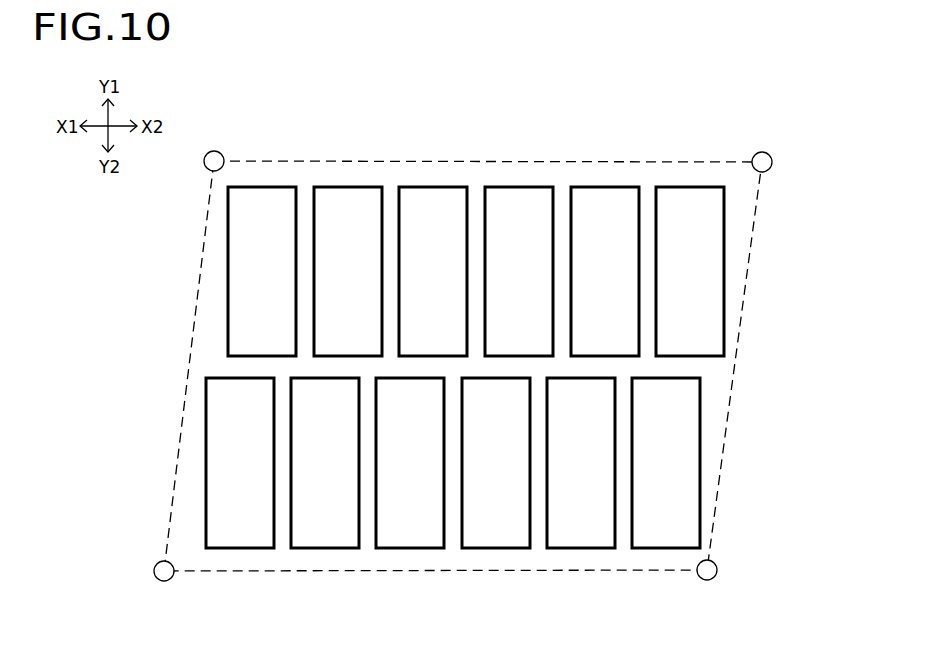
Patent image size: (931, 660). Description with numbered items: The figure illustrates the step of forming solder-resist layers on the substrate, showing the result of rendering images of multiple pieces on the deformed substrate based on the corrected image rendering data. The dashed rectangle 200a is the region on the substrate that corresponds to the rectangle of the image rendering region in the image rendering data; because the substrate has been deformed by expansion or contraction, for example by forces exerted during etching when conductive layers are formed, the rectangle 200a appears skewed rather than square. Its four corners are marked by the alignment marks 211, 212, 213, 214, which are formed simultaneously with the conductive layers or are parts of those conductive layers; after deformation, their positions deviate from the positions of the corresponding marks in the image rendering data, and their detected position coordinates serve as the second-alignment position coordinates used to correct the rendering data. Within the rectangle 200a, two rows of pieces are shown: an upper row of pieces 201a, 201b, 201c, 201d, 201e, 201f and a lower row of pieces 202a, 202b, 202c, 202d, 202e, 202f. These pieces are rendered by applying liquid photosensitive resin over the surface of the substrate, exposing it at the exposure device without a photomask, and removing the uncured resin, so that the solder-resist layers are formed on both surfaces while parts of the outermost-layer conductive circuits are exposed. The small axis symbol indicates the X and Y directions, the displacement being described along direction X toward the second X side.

The rectangle 200a is at (512, 160).
The piece 201a is at (262, 271).
The piece 201b is at (348, 271).
The piece 201c is at (433, 271).
The piece 201d is at (519, 271).
The piece 201e is at (605, 271).
The piece 201f is at (690, 271).
The piece 202a is at (240, 463).
The piece 202b is at (325, 463).
The piece 202c is at (410, 463).
The piece 202d is at (496, 463).
The piece 202e is at (581, 463).
The piece 202f is at (666, 463).
The alignment mark 211 is at (164, 581).
The alignment mark 212 is at (707, 580).
The alignment mark 213 is at (754, 154).
The alignment mark 214 is at (210, 154).